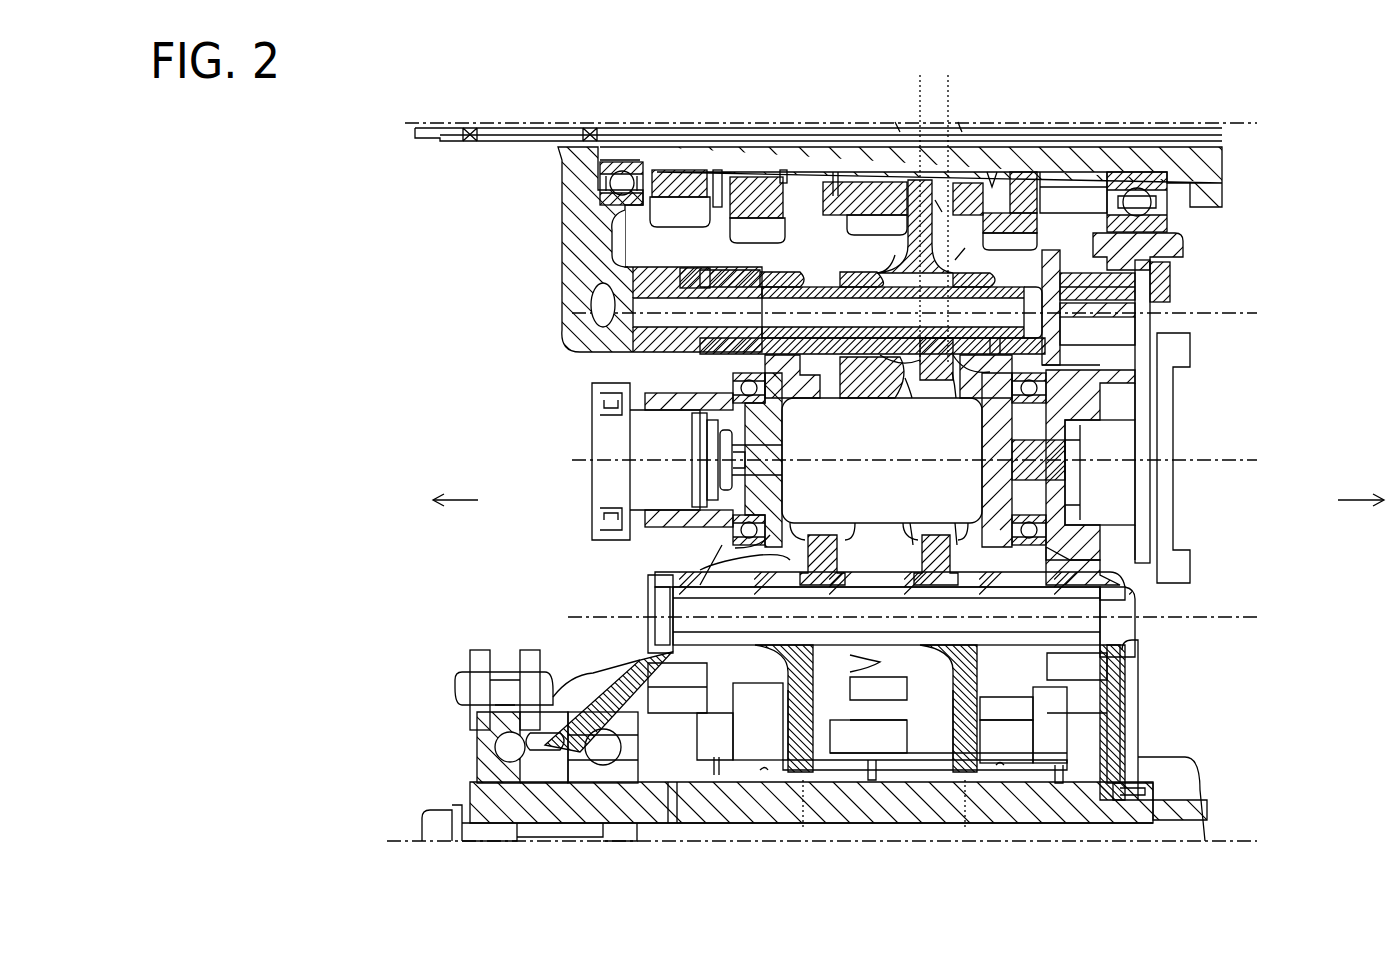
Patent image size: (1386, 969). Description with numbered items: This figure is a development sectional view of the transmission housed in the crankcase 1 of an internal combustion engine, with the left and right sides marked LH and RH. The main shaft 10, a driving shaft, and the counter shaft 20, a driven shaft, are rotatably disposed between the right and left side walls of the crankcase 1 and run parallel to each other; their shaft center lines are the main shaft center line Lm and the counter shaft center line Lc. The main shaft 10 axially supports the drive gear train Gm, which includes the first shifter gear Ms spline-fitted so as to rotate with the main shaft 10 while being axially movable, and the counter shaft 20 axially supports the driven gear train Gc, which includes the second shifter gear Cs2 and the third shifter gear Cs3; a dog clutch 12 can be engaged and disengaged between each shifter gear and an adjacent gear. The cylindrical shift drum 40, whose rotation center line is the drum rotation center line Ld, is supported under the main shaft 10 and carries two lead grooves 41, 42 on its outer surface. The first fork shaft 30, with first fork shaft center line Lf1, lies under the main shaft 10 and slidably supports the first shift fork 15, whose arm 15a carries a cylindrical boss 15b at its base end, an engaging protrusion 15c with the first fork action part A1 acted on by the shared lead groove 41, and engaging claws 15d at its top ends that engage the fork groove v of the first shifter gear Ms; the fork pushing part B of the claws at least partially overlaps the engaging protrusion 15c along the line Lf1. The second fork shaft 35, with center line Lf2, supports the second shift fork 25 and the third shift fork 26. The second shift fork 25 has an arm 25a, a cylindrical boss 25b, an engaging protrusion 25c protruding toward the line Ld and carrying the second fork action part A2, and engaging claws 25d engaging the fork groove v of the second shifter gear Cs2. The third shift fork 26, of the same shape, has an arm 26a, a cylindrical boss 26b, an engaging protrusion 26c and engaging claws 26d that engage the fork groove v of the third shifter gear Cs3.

The crankcase 1 is at (1125, 695).
The main shaft 10 is at (1017, 163).
The dog clutch 12 is at (833, 195).
The first shift fork 15 is at (905, 238).
The arm 15a is at (905, 272).
The cylindrical boss 15b is at (838, 375).
The engaging protrusion 15c is at (925, 372).
The engaging claw 15d is at (923, 211).
The counter shaft 20 is at (847, 807).
The second shift fork 25 is at (995, 690).
The arm 25a is at (982, 688).
The cylindrical boss 25b is at (1060, 572).
The engaging protrusion 25c is at (938, 545).
The engaging claw 25d is at (965, 835).
The third shift fork 26 is at (765, 662).
The arm 26a is at (790, 690).
The cylindrical boss 26b is at (868, 662).
The engaging protrusion 26c is at (822, 545).
The engaging claw 26d is at (803, 835).
The first fork shaft 30 is at (818, 288).
The second fork shaft 35 is at (886, 587).
The shift drum 40 is at (762, 550).
The lead groove 41 is at (955, 360).
The lead groove 42 is at (825, 365).
The first fork action part A1 is at (905, 380).
The second fork action part A2 is at (913, 540).
The fork pushing part B is at (895, 128).
The second shifter gear Cs2 is at (1000, 765).
The third shifter gear Cs3 is at (763, 770).
The driven gear train Gc is at (720, 668).
The drive gear train Gm is at (685, 238).
The counter shaft center line Lc is at (838, 841).
The drum rotation center line Ld is at (931, 460).
The first fork shaft center line Lf1 is at (934, 313).
The second fork shaft center line Lf2 is at (932, 617).
The main shaft center line Lm is at (851, 124).
The first shifter gear Ms is at (850, 165).
The fork groove v is at (940, 210).
The left-hand direction LH is at (455, 514).
The right-hand direction RH is at (1361, 514).